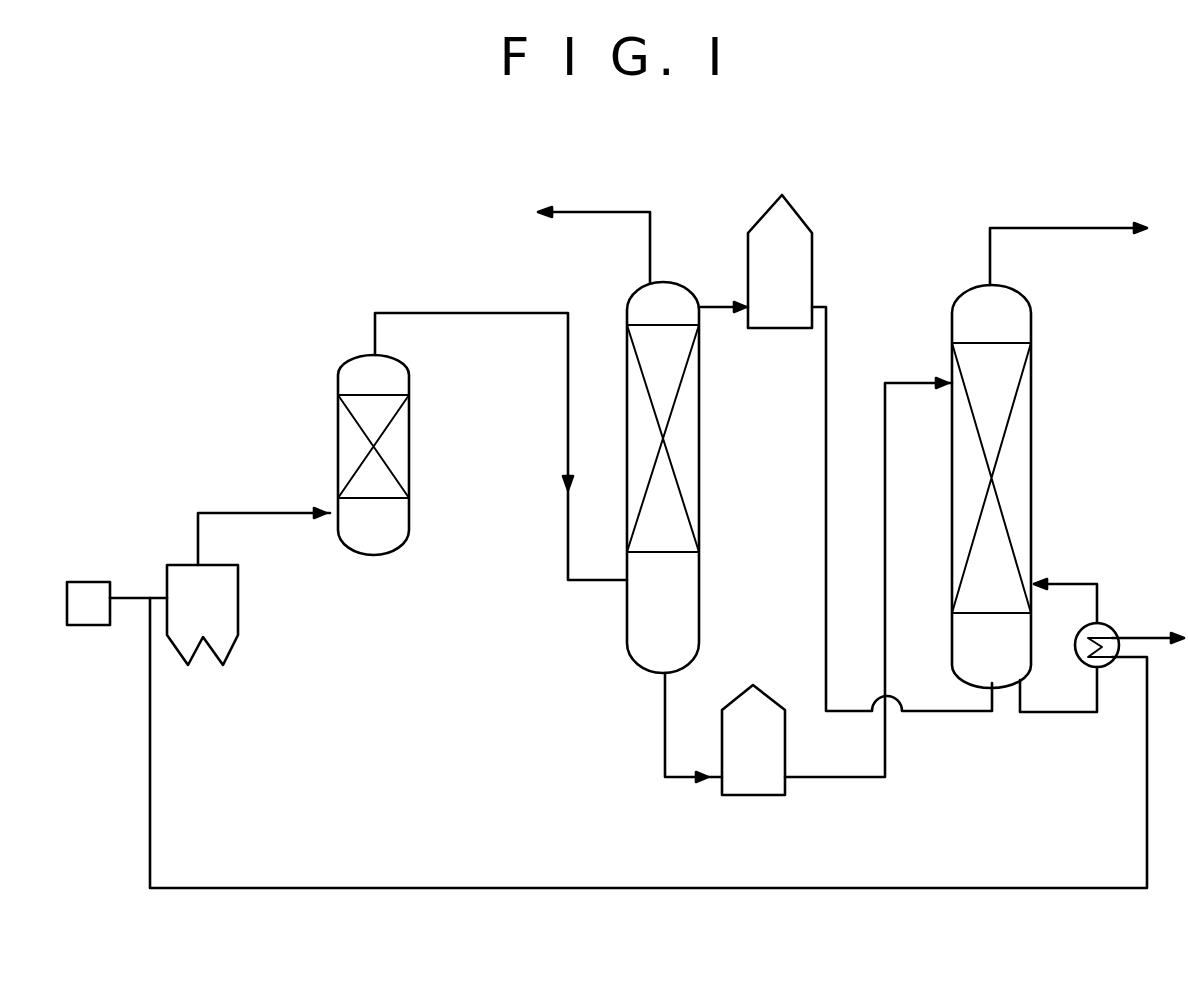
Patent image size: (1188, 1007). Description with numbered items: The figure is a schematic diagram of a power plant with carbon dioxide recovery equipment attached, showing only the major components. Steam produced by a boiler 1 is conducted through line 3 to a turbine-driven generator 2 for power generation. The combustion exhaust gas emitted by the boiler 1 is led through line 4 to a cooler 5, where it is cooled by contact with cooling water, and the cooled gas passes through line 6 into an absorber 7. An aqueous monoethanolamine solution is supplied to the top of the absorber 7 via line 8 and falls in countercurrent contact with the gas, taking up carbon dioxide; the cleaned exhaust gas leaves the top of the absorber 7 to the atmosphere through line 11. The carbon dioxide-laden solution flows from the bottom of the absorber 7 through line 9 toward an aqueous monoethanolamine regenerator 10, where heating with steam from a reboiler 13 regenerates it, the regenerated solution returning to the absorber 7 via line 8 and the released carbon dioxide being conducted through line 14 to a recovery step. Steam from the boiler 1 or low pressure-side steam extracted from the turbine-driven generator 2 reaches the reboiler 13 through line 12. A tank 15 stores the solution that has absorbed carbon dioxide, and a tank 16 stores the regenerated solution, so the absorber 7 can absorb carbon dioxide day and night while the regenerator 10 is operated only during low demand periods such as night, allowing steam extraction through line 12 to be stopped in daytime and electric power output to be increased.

The boiler 1 is at (234, 646).
The turbine-driven generator 2 is at (88, 625).
The line 3 is at (130, 597).
The line 4 is at (260, 515).
The cooler 5 is at (409, 452).
The line 6 is at (458, 313).
The absorber 7 is at (700, 462).
The line 8 is at (828, 336).
The line 9 is at (820, 777).
The aqueous monoethanolamine regenerator 10 is at (1032, 328).
The line 11 is at (627, 212).
The line 12 is at (443, 888).
The reboiler 13 is at (1110, 622).
The line 14 is at (1100, 228).
The tank 15 is at (752, 795).
The tank 16 is at (810, 232).